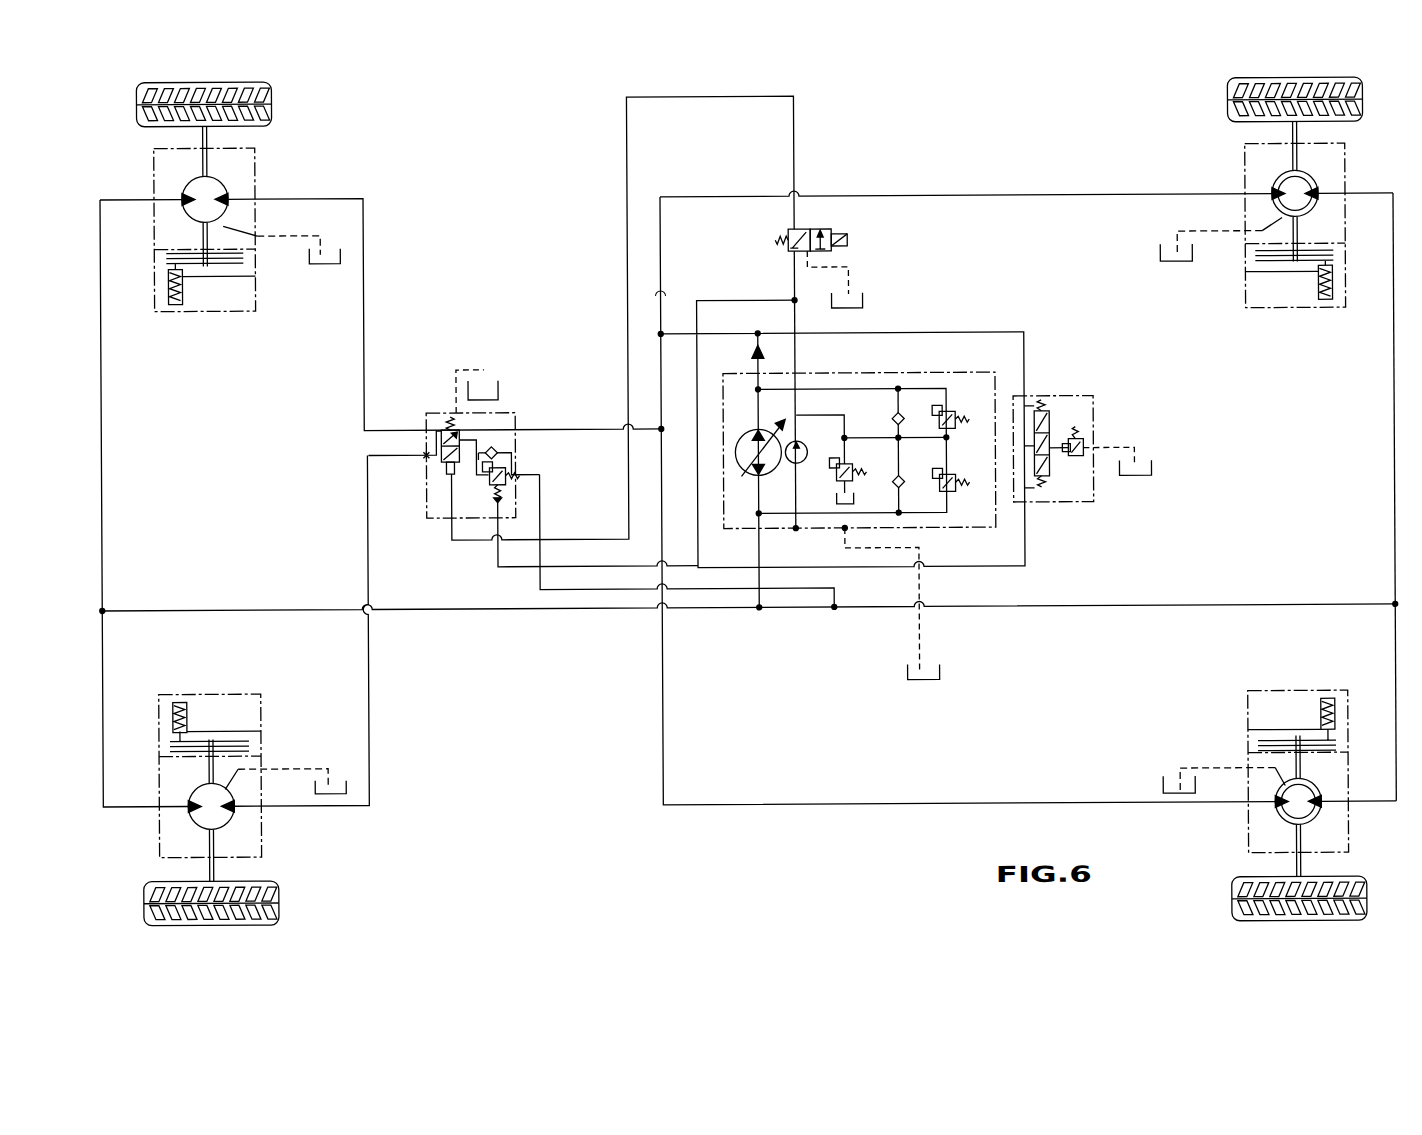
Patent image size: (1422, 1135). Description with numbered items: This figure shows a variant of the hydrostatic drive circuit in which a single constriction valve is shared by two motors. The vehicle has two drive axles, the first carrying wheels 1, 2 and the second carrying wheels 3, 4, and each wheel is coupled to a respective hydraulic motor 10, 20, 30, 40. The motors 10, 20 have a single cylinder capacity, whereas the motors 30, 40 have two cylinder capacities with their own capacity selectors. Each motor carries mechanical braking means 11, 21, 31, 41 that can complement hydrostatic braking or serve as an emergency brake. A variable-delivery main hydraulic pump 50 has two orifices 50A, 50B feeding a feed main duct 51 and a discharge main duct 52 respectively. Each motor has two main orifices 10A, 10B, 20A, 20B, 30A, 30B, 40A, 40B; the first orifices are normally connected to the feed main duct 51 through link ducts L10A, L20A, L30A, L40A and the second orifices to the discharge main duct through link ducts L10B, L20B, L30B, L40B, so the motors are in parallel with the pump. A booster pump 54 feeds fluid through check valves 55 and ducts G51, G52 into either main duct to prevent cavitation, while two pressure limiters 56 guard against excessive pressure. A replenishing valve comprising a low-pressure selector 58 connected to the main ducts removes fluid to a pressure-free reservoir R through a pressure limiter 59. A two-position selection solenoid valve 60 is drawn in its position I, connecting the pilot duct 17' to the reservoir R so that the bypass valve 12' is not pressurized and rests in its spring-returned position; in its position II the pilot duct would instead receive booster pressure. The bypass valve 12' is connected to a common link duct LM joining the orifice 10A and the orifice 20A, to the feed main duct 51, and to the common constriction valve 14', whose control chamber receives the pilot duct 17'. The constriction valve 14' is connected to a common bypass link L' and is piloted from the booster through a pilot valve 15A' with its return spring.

The wheel 1 is at (273, 99).
The wheel 2 is at (277, 905).
The wheel 3 is at (1228, 104).
The wheel 4 is at (1228, 906).
The motor 10 is at (212, 193).
The main orifice 10A is at (230, 197).
The main orifice 10B is at (183, 200).
The mechanical braking means 11 is at (211, 288).
The motor 20 is at (215, 815).
The main orifice 20A is at (233, 808).
The main orifice 20B is at (186, 807).
The mechanical braking means 21 is at (212, 726).
The motor 30 is at (1300, 195).
The main orifice 30A is at (1273, 200).
The main orifice 30B is at (1318, 200).
The mechanical braking means 31 is at (1290, 288).
The motor 40 is at (1300, 818).
The main orifice 40A is at (1273, 808).
The main orifice 40B is at (1318, 808).
The mechanical braking means 41 is at (1292, 720).
The main hydraulic pump 50 is at (745, 452).
The orifice 50A is at (752, 430).
The orifice 50B is at (755, 478).
The feed main duct 51 is at (772, 337).
The discharge main duct 52 is at (757, 582).
The booster pump 54 is at (800, 462).
The check valves 55 is at (893, 478).
The pressure limiters 56 is at (957, 427).
The low-pressure selector 58 is at (1058, 469).
The pressure limiter 59 is at (1085, 450).
The selection solenoid valve 60 is at (812, 233).
The position I is at (788, 233).
The position II is at (833, 233).
The pressure-free reservoir R is at (862, 300).
The link duct L10A is at (363, 338).
The link duct L10B is at (100, 350).
The link duct L20A is at (366, 730).
The link duct L20B is at (102, 633).
The link duct L30A is at (935, 200).
The link duct L30B is at (1393, 378).
The link duct L40A is at (937, 808).
The link duct L40B is at (1393, 640).
The common link duct LM is at (438, 418).
The bypass valve 12' is at (492, 387).
The common constriction valve 14' is at (454, 504).
The pilot valve 15A' is at (580, 547).
The pilot duct 17' is at (622, 318).
The common bypass link L' is at (688, 537).
The duct G51 is at (818, 387).
The duct G52 is at (832, 520).